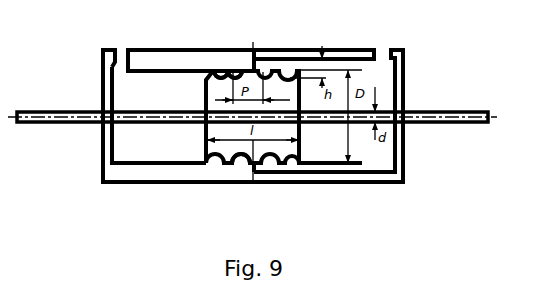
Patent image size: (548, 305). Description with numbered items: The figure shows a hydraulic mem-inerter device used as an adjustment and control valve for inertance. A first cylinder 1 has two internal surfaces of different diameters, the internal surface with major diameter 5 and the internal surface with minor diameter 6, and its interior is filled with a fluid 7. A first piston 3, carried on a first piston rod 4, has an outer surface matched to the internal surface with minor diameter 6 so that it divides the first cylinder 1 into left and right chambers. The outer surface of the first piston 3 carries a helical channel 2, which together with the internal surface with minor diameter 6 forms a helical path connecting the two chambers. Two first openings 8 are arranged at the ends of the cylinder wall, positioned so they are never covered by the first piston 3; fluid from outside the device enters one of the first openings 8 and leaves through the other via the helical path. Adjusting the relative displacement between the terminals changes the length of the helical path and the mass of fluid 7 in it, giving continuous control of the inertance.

The first cylinder 1 is at (131, 168).
The helical channel 2 is at (243, 154).
The first piston 3 is at (287, 145).
The first piston rod 4 is at (432, 124).
The internal surface with major diameter 5 is at (358, 62).
The internal surface with minor diameter 6 is at (173, 72).
The fluid 7 is at (145, 95).
The first openings 8 is at (121, 60).